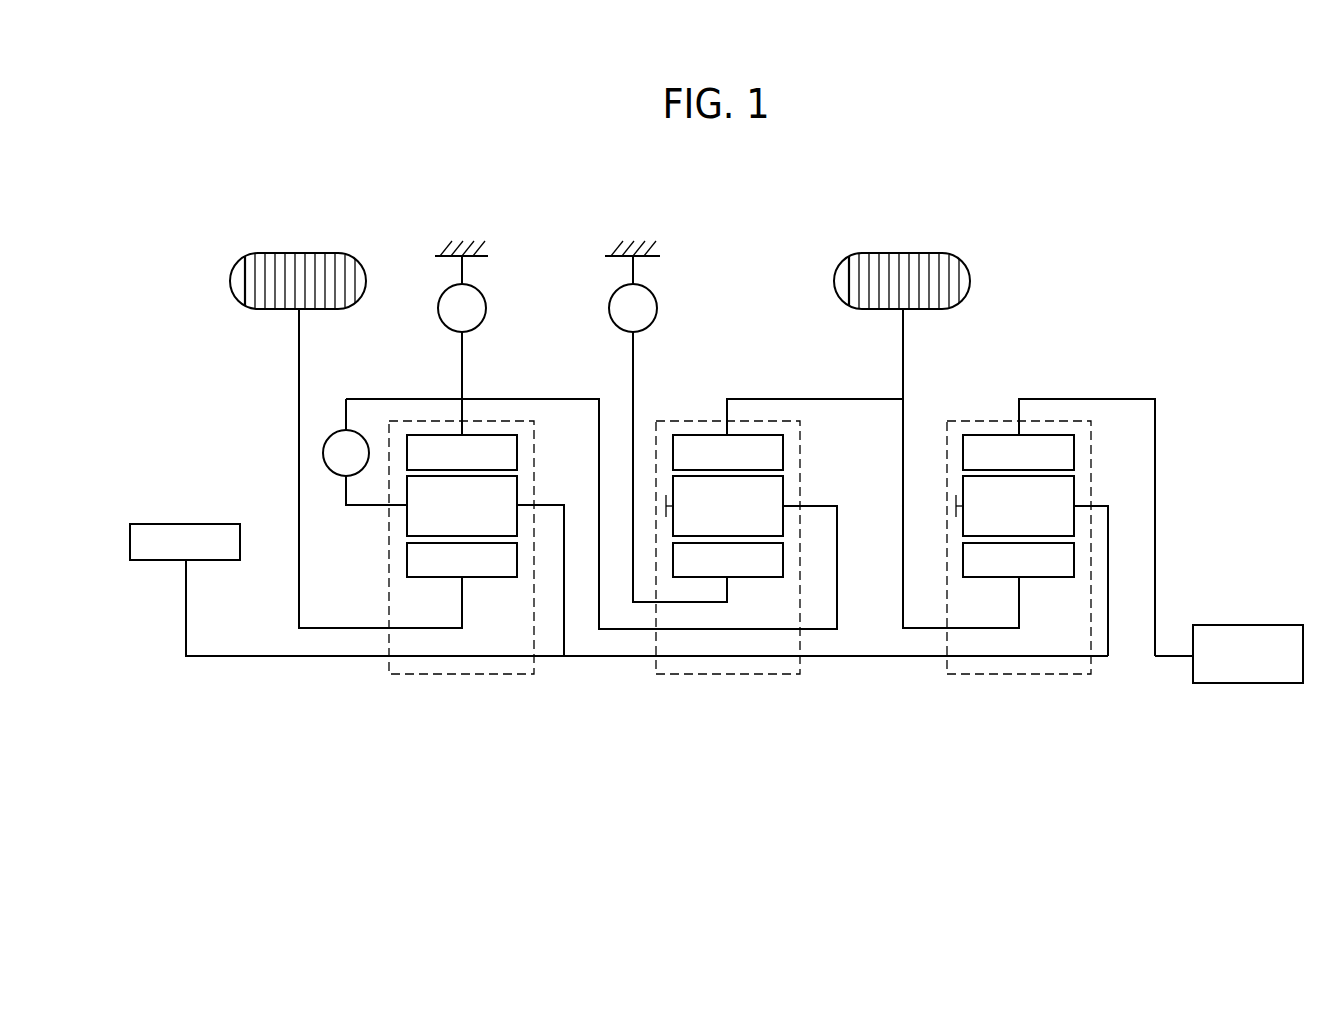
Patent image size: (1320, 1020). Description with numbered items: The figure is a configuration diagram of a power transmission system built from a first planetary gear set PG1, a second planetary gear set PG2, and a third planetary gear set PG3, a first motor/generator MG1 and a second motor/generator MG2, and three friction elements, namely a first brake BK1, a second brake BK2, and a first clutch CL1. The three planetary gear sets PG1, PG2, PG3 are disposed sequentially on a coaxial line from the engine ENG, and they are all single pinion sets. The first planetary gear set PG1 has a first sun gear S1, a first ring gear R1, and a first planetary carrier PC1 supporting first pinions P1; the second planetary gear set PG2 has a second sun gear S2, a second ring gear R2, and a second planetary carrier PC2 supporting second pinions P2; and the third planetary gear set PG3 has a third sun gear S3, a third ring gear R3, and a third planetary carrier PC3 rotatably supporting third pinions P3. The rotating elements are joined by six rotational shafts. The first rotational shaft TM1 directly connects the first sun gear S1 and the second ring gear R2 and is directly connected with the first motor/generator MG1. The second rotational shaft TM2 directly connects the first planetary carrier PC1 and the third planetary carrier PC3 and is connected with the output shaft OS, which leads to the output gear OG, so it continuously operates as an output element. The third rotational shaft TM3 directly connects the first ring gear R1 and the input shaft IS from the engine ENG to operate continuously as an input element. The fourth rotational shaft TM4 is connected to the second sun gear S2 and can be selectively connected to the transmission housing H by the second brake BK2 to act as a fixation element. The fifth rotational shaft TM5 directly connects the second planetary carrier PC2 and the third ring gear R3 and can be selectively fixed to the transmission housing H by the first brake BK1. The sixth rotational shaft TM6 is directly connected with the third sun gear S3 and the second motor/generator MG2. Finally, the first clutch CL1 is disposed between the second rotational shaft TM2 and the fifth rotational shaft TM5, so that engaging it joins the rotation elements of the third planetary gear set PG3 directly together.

The first motor/generator MG1 is at (990, 276).
The second motor/generator MG2 is at (213, 280).
The first brake BK1 is at (462, 345).
The second brake BK2 is at (633, 294).
The first clutch CL1 is at (365, 452).
The transmission housing H is at (472, 240).
The first planetary gear set PG1 is at (1015, 676).
The second planetary gear set PG2 is at (725, 676).
The third planetary gear set PG3 is at (460, 676).
The first ring gear R1 is at (1018, 452).
The first pinions P1 is at (1015, 506).
The first sun gear S1 is at (1018, 560).
The first planetary carrier PC1 is at (1082, 504).
The second ring gear R2 is at (728, 452).
The second pinions P2 is at (724, 506).
The second sun gear S2 is at (728, 560).
The second planetary carrier PC2 is at (792, 496).
The third ring gear R3 is at (462, 452).
The third pinions P3 is at (462, 506).
The third sun gear S3 is at (462, 560).
The third planetary carrier PC3 is at (526, 500).
The first rotational shaft TM1 is at (929, 629).
The second rotational shaft TM2 is at (851, 658).
The third rotational shaft TM3 is at (1100, 398).
The fourth rotational shaft TM4 is at (647, 603).
The fifth rotational shaft TM5 is at (596, 612).
The sixth rotational shaft TM6 is at (349, 628).
The output gear OG is at (185, 542).
The output shaft OS is at (255, 658).
The input shaft IS is at (1176, 658).
The engine ENG is at (1248, 654).